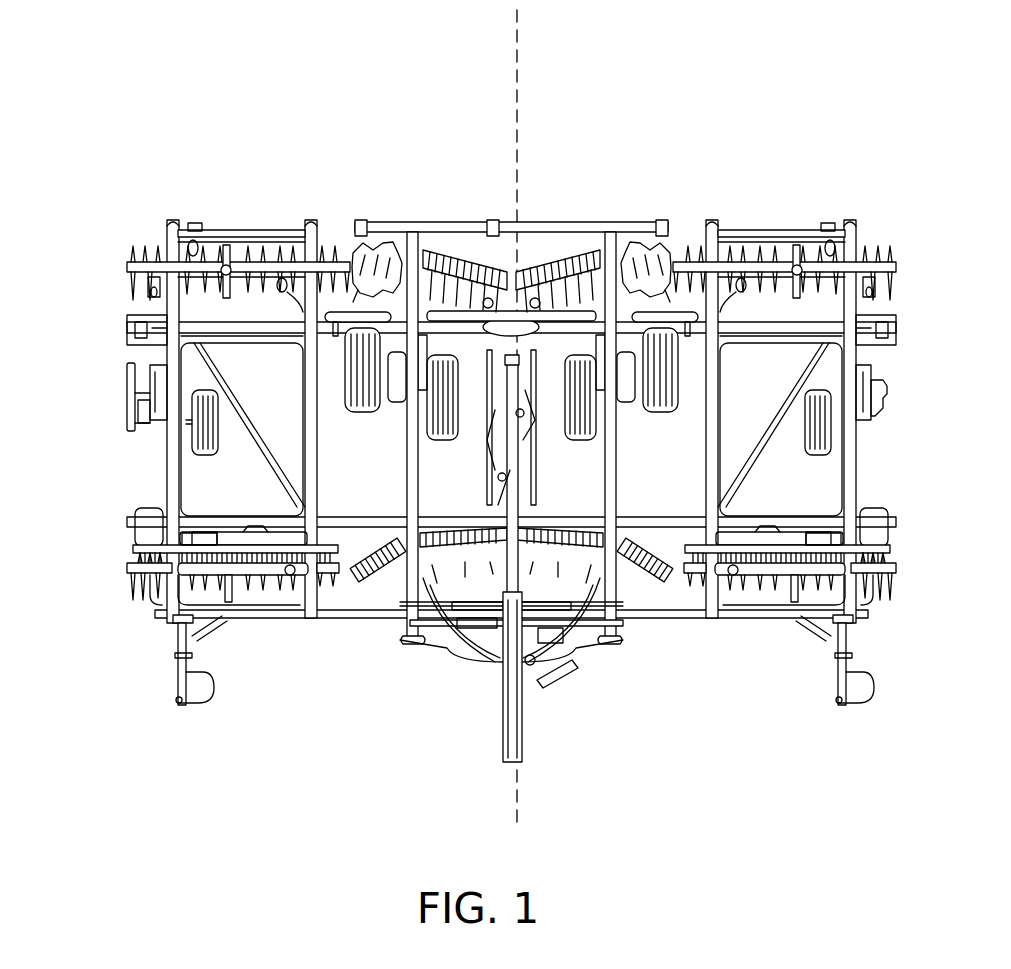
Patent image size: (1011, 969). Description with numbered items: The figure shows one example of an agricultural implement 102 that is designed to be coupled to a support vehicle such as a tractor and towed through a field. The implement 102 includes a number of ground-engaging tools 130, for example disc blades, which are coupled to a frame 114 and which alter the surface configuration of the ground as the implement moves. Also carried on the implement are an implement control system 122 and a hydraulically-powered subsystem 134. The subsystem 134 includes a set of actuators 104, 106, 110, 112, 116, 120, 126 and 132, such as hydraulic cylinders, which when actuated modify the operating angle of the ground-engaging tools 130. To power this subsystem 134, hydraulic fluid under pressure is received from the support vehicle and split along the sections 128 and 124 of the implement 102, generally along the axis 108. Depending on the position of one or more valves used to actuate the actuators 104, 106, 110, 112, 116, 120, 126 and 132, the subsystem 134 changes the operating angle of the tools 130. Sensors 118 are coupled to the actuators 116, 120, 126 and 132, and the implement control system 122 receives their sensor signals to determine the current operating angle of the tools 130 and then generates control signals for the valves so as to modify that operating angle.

The agricultural implement 102 is at (509, 434).
The actuator 104 is at (182, 251).
The actuator 106 is at (395, 232).
The axis 108 is at (517, 82).
The actuator 110 is at (640, 232).
The actuator 112 is at (895, 232).
The frame 114 is at (855, 458).
The actuator 116 is at (840, 556).
The sensor 118 is at (140, 578).
The actuator 120 is at (663, 548).
The implement control system 122 is at (511, 558).
The section 124 is at (756, 803).
The actuator 126 is at (357, 565).
The section 128 is at (273, 799).
The ground-engaging tool 130 is at (248, 253).
The actuator 132 is at (187, 537).
The hydraulically-powered subsystem 134 is at (106, 472).